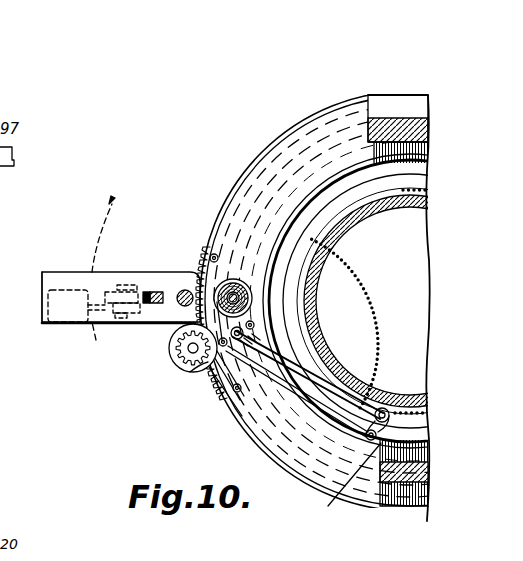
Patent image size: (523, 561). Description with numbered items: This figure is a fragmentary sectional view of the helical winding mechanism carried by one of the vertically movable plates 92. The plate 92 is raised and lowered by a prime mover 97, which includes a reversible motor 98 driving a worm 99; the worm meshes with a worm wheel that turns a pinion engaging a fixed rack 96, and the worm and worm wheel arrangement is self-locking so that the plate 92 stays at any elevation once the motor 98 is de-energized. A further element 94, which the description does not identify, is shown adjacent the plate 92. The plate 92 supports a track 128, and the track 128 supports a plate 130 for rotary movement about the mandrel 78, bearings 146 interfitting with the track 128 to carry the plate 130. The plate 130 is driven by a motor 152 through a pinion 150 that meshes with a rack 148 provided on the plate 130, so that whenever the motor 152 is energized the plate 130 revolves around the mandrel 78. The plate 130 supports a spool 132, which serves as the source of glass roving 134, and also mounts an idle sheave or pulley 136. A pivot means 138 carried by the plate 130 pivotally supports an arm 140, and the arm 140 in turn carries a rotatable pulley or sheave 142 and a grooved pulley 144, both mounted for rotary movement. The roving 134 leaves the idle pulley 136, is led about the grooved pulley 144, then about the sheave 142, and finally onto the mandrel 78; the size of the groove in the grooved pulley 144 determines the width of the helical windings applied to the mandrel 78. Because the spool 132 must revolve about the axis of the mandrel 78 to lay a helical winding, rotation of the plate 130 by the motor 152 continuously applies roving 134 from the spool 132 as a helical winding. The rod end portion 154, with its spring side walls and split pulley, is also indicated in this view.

The mandrel 78 is at (371, 226).
The plate 92 is at (383, 97).
The shaft 94 is at (185, 290).
The fixed rack 96 is at (156, 304).
The prime mover 97 is at (51, 330).
The motor 98 is at (68, 332).
The worm 99 is at (109, 279).
The track 128 is at (393, 279).
The plate 130 is at (323, 150).
The spool 132 is at (240, 298).
The roving 134 is at (238, 414).
The idle sheave or pulley 136 is at (186, 366).
The pivot means 138 is at (214, 380).
The arm 140 is at (307, 380).
The rotatable pulley or sheave 142 is at (390, 415).
The grooved pulley 144 is at (329, 507).
The bearings 146 is at (208, 254).
The rack 148 is at (186, 328).
The pinion 150 is at (171, 356).
The motor 152 is at (192, 372).
The end portion 154 is at (304, 260).